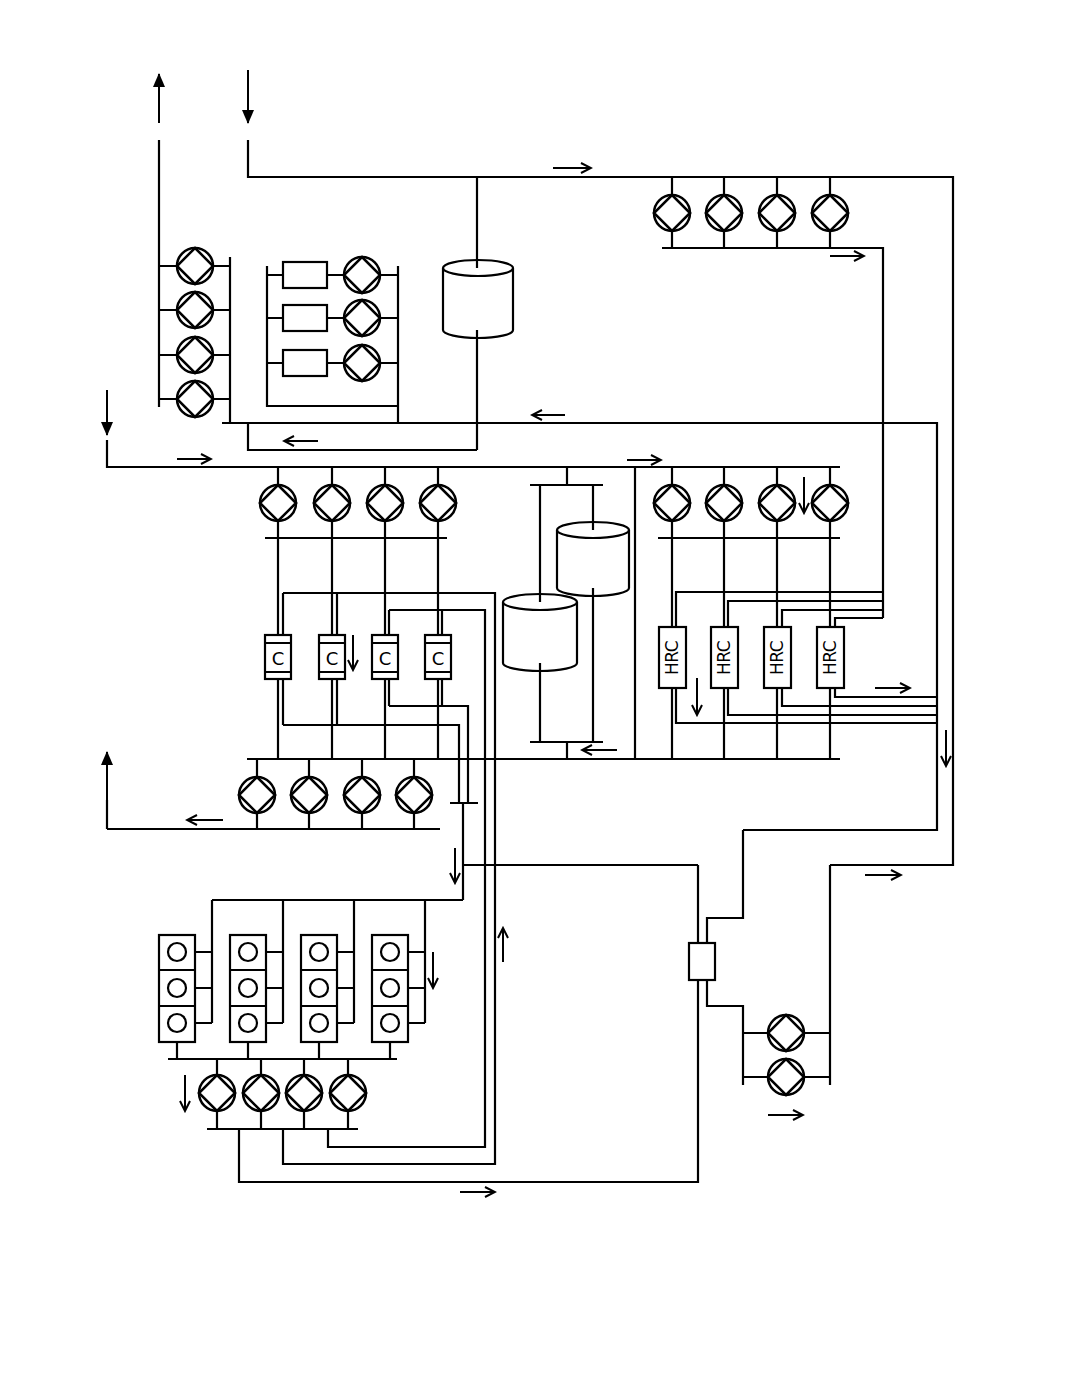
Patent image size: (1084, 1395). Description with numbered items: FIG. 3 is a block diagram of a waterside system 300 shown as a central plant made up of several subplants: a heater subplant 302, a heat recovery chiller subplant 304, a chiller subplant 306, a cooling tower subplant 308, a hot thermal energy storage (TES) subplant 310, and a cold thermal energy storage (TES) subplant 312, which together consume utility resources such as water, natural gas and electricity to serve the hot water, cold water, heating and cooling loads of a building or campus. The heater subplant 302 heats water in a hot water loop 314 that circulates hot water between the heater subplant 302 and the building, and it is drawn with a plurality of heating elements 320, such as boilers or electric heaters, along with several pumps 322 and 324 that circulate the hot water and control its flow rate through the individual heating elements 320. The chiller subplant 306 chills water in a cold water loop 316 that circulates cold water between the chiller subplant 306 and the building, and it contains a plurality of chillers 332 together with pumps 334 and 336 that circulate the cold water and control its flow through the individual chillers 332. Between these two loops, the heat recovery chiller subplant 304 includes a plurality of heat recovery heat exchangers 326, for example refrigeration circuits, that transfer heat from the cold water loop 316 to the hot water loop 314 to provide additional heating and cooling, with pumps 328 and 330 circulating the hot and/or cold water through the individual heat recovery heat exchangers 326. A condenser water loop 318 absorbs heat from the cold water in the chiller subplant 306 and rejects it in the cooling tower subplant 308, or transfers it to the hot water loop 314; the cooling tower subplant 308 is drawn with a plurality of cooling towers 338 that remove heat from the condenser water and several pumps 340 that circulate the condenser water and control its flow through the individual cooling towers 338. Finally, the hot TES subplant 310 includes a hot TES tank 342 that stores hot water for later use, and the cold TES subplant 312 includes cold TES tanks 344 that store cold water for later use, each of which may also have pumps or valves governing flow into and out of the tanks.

The waterside system 300 is at (836, 48).
The heater subplant 302 is at (427, 162).
The heat recovery chiller subplant 304 is at (869, 746).
The chiller subplant 306 is at (217, 579).
The cooling tower subplant 308 is at (140, 976).
The hot thermal energy storage (TES) subplant 310 is at (538, 320).
The cold thermal energy storage (TES) subplant 312 is at (511, 547).
The hot water loop 314 is at (159, 186).
The cold water loop 316 is at (160, 470).
The condenser water loop 318 is at (680, 1184).
The heating elements 320 is at (290, 262).
The pumps 322 is at (200, 248).
The pumps 324 is at (366, 258).
The heat recovery heat exchangers 326 is at (846, 655).
The pumps 328 is at (846, 490).
The pumps 330 is at (852, 212).
The chillers 332 is at (264, 650).
The pumps 334 is at (243, 786).
The pumps 336 is at (261, 500).
The cooling towers 338 is at (410, 1037).
The pumps 340 is at (368, 1104).
The hot TES tank 342 is at (506, 287).
The cold TES tanks 344 is at (580, 532).